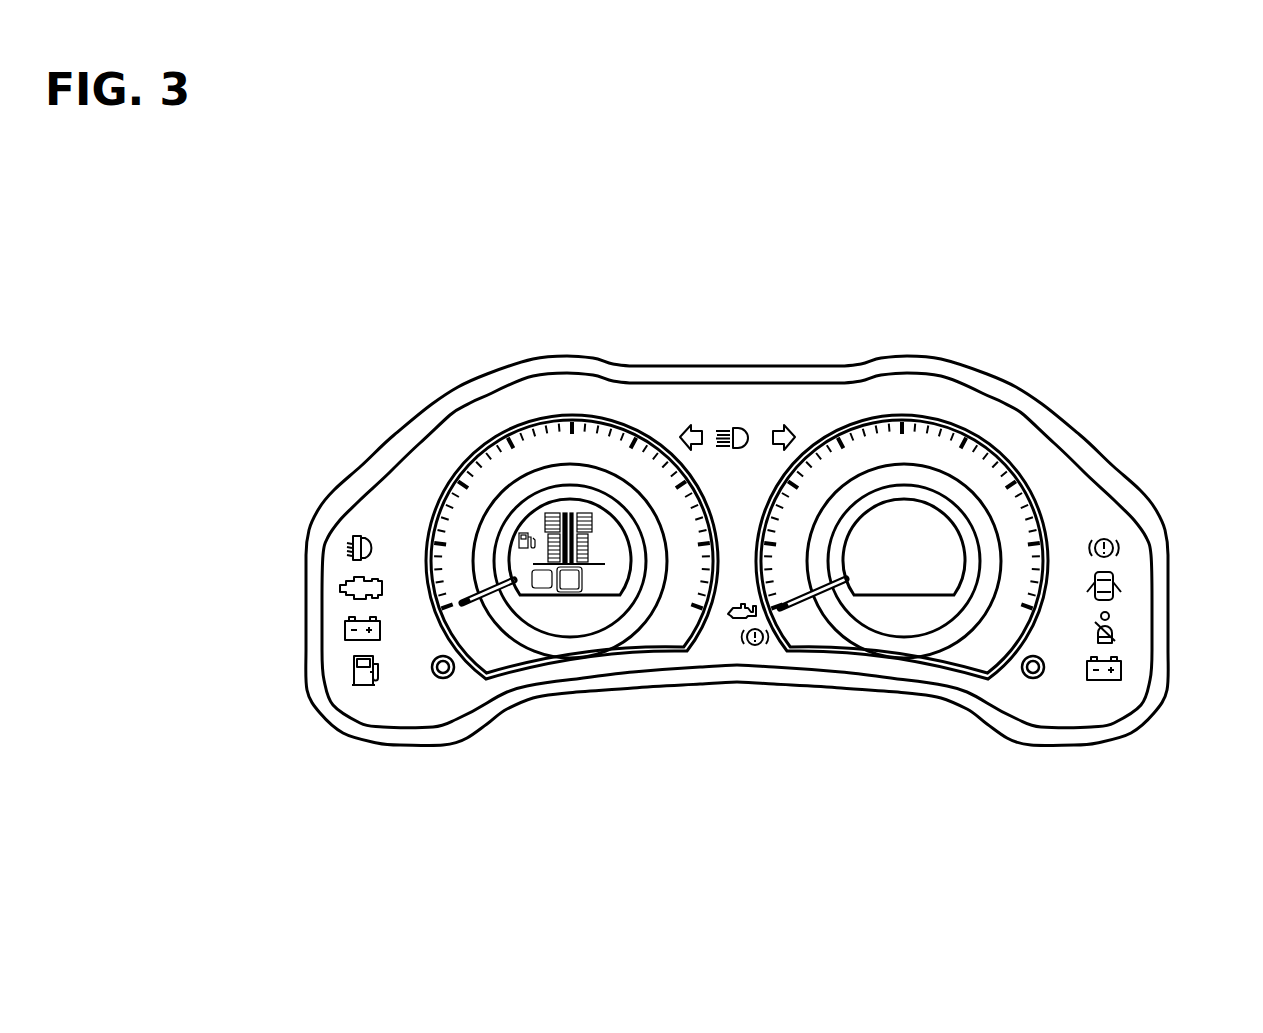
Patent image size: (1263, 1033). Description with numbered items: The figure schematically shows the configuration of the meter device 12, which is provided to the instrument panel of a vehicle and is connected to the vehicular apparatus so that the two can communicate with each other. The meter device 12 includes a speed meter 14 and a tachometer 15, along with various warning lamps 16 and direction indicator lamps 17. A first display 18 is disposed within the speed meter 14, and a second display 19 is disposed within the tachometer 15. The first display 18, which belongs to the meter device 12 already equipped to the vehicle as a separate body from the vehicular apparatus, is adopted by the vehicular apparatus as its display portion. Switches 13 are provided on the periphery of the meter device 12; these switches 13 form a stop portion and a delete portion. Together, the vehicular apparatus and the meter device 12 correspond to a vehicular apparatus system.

The meter device 12 is at (965, 328).
The switches 13 is at (438, 678).
The speed meter 14 is at (968, 423).
The tachometer 15 is at (634, 425).
The warning lamps 16 is at (347, 667).
The direction indicator lamps 17 is at (775, 420).
The first display 18 is at (863, 587).
The second display 19 is at (588, 605).